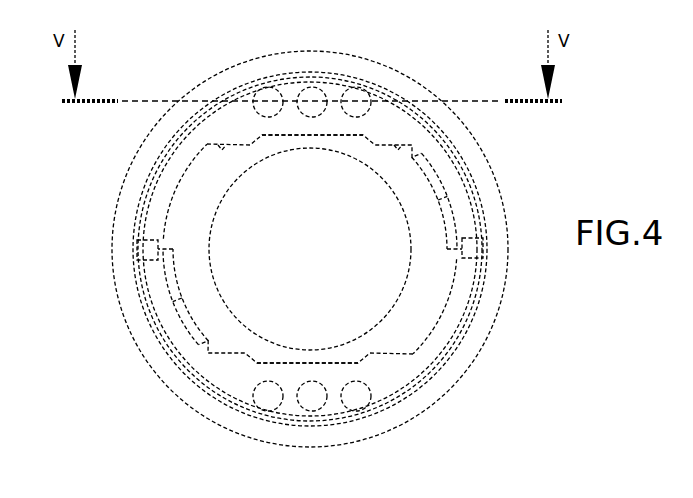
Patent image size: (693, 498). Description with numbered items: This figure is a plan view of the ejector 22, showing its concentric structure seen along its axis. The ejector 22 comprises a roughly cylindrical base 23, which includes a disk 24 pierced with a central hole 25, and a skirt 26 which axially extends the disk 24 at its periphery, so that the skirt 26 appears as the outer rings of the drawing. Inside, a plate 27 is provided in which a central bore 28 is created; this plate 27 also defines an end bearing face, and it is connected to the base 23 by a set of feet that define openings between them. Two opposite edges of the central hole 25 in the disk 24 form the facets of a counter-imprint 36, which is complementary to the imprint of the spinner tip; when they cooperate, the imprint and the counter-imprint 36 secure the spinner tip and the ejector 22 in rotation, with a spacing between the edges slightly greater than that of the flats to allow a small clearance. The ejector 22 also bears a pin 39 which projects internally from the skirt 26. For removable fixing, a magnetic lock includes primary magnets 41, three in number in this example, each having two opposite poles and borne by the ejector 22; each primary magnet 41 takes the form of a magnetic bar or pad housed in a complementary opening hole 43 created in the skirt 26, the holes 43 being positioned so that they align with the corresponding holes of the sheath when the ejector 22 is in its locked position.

The ejector 22 is at (510, 179).
The base 23 is at (481, 368).
The disk 24 is at (160, 195).
The central hole 25 is at (187, 177).
The skirt 26 is at (492, 298).
The plate 27 is at (242, 328).
The central bore 28 is at (220, 289).
The counter-imprint 36 is at (326, 134).
The pin 39 is at (150, 249).
The primary magnet 41 is at (265, 92).
The opening hole 43 is at (372, 117).